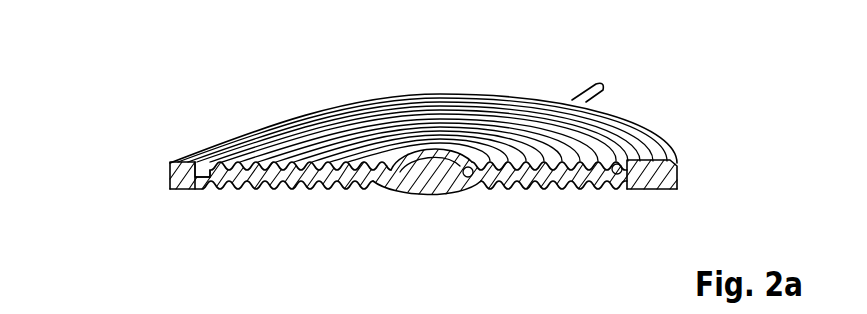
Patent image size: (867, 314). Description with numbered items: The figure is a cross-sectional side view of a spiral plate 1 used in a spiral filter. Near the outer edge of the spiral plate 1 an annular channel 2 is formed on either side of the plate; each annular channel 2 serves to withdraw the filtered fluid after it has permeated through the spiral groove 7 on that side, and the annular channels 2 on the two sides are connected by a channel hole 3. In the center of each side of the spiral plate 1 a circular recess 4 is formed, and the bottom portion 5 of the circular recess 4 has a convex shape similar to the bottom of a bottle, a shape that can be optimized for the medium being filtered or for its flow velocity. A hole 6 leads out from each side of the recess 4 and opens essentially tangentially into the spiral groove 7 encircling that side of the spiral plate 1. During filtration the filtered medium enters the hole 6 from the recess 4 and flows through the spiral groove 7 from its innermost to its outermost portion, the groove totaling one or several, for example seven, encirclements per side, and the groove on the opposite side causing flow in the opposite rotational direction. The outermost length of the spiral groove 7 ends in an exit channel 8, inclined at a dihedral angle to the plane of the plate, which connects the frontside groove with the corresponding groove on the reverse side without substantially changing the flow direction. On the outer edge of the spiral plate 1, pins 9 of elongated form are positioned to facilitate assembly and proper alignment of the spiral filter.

The spiral plate 1 is at (160, 178).
The annular channel 2 is at (648, 142).
The channel hole 3 is at (205, 172).
The circular recess 4 is at (400, 160).
The bottom portion 5 is at (430, 163).
The hole 6 is at (473, 180).
The spiral groove 7 is at (230, 138).
The exit channel 8 is at (624, 167).
The pin 9 is at (603, 86).